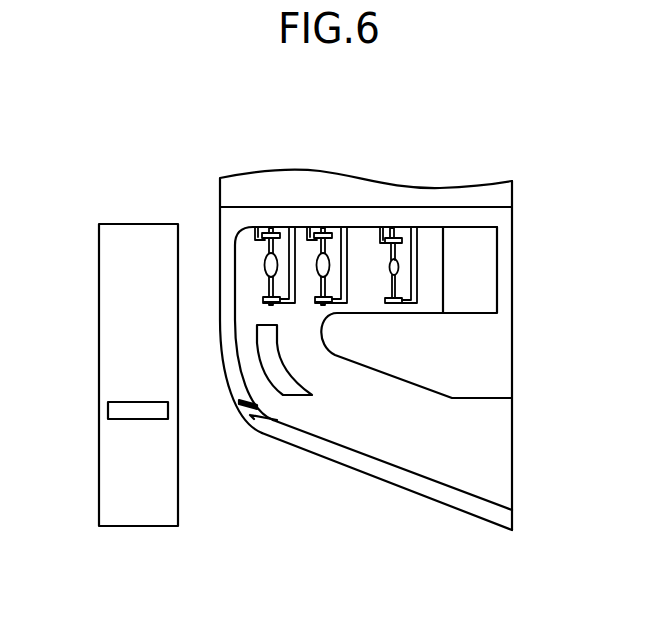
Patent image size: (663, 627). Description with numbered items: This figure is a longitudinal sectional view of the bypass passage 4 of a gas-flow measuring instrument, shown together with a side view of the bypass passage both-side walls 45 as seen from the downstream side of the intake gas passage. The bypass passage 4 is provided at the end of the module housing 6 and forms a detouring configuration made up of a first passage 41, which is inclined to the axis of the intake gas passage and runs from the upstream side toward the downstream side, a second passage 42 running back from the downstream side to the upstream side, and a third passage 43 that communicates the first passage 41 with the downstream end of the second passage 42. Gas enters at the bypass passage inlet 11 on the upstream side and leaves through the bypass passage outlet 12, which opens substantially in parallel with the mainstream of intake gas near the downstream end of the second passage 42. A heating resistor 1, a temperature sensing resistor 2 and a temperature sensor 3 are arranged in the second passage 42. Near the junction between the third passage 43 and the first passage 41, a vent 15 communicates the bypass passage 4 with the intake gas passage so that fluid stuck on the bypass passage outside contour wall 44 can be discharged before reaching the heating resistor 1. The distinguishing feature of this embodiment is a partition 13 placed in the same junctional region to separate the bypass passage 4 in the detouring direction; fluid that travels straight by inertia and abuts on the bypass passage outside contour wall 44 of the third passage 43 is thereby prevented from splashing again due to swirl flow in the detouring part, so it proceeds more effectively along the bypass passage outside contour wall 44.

The heating resistor 1 is at (391, 240).
The temperature sensing resistor 2 is at (318, 230).
The temperature sensor 3 is at (268, 232).
The bypass passage 4 is at (477, 480).
The module housing 6 is at (513, 242).
The bypass passage inlet 11 is at (513, 487).
The bypass passage outlet 12 is at (483, 288).
The partition 13 is at (296, 393).
The vent 15 is at (256, 409).
The first passage 41 is at (361, 433).
The second passage 42 is at (428, 238).
The third passage 43 is at (263, 317).
The bypass passage outside contour wall 44 is at (441, 482).
The bypass passage both-side walls 45 is at (177, 288).